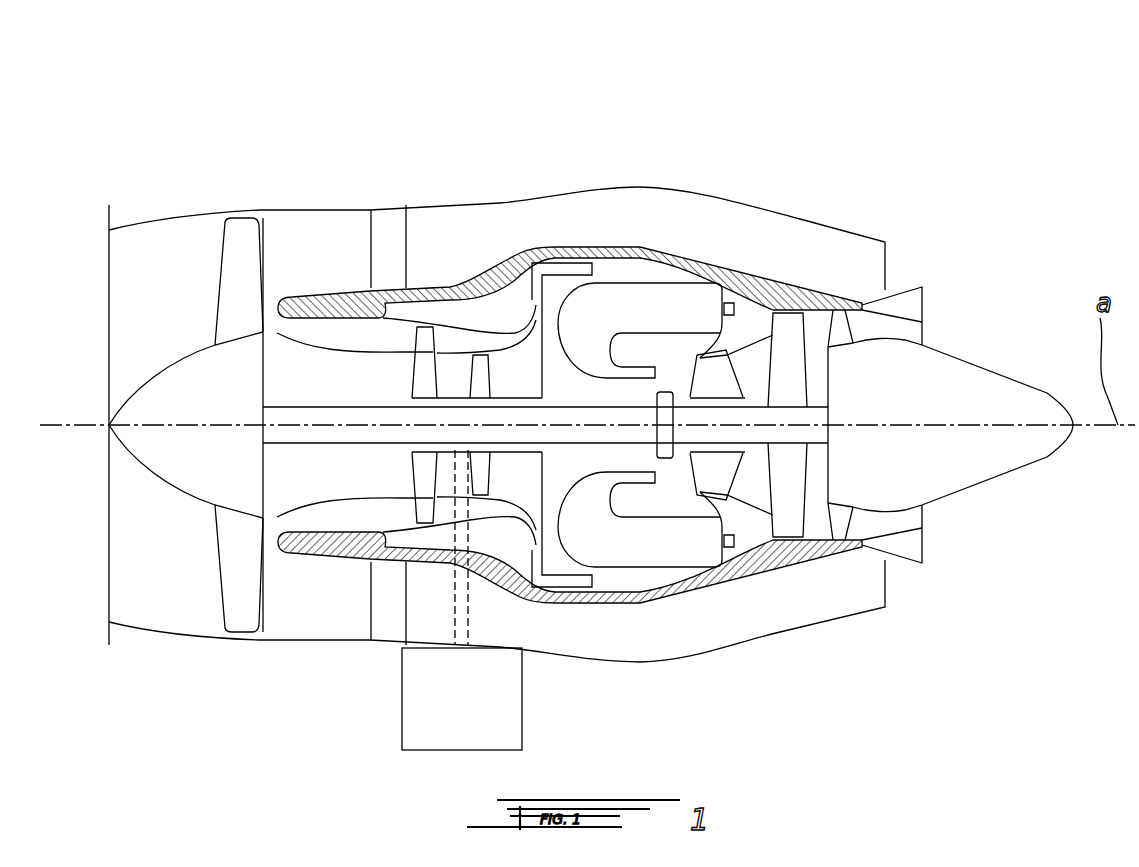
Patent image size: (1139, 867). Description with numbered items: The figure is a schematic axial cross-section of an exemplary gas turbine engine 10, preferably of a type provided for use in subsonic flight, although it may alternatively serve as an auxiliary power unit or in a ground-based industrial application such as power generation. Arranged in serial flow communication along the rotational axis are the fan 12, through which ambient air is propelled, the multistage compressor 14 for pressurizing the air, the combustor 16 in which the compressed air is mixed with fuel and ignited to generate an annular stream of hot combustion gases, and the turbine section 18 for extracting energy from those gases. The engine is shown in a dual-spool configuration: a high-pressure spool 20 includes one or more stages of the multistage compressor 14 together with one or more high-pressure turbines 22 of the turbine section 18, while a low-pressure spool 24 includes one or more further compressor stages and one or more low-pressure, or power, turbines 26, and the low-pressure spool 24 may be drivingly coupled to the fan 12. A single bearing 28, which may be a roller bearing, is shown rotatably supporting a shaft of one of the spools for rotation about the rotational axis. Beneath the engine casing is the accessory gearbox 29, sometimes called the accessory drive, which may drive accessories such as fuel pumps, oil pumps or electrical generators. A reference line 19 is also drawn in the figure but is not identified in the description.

The gas turbine engine 10 is at (895, 122).
The fan 12 is at (237, 562).
The multistage compressor 14 is at (452, 345).
The combustor 16 is at (640, 303).
The turbine section 18 is at (753, 482).
The combustor liner 19 is at (673, 362).
The high-pressure spool 20 is at (470, 397).
The high-pressure turbine 22 is at (722, 365).
The low-pressure spool 24 is at (751, 375).
The low-pressure turbine 26 is at (790, 337).
The bearing 28 is at (657, 398).
The accessory gearbox 29 is at (432, 705).